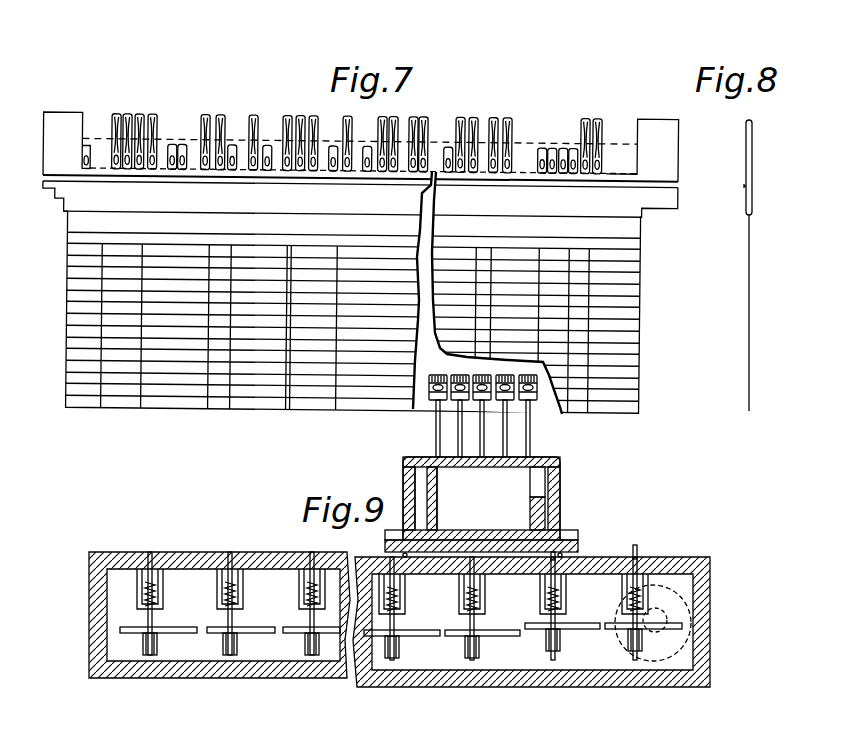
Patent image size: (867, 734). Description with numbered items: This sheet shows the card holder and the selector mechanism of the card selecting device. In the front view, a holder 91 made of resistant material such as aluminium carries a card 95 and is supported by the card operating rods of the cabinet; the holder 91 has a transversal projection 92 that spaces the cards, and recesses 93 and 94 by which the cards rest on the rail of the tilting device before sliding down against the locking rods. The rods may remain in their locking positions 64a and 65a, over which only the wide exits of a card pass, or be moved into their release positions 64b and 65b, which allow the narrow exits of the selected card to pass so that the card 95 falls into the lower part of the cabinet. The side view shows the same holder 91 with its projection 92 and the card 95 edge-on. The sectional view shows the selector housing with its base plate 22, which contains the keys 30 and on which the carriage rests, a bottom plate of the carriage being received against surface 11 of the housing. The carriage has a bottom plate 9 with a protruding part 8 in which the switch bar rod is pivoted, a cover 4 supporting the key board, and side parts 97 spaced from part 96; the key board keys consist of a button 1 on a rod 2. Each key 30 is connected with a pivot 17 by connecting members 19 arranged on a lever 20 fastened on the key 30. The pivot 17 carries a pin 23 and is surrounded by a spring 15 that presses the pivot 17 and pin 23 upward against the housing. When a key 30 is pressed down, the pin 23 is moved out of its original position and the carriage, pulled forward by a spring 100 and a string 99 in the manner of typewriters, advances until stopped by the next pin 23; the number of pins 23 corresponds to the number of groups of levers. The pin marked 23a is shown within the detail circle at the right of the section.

In FIG. 7, the holder 91 is at (62, 121).
In FIG. 8, the holder 91 is at (746, 137).
In FIG. 7, the locking position of rod 64 64a is at (100, 133).
In FIG. 7, the release position of rod 64 64b is at (199, 138).
In FIG. 7, the locking position of rod 65 65a is at (283, 147).
In FIG. 7, the release position of rod 65 65b is at (329, 147).
In FIG. 7, the transversal projection 92 is at (670, 183).
In FIG. 8, the transversal projection 92 is at (744, 186).
In FIG. 7, the recess 93 is at (647, 212).
In FIG. 7, the recess 94 is at (53, 194).
In FIG. 7, the card 95 is at (118, 307).
In FIG. 8, the card 95 is at (749, 290).
In FIG. 9, the button 1 is at (487, 374).
In FIG. 9, the rod 2 is at (458, 430).
In FIG. 9, the cover 4 is at (442, 458).
In FIG. 9, the part 96 is at (418, 470).
In FIG. 9, the side part 97 is at (408, 500).
In FIG. 9, the protruding part 8 is at (484, 483).
In FIG. 9, the bottom plate 9 is at (490, 530).
In FIG. 9, the surface 11 is at (568, 545).
In FIG. 9, the spring 15 is at (142, 591).
In FIG. 9, the pivot 17 is at (262, 603).
In FIG. 9, the connecting member 19 is at (148, 642).
In FIG. 9, the lever 20 is at (240, 656).
In FIG. 9, the base plate 22 is at (464, 682).
In FIG. 9, the pin 23 is at (262, 587).
In FIG. 9, the key 30 is at (193, 640).
In FIG. 9, the string 99 is at (585, 560).
In FIG. 9, the spring 100 is at (683, 562).
In FIG. 9, the pin 23a is at (646, 562).